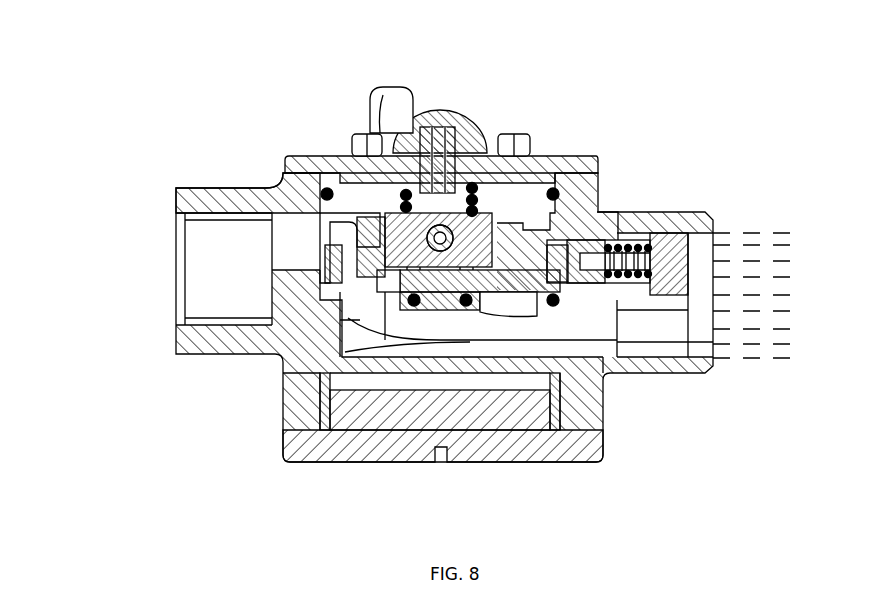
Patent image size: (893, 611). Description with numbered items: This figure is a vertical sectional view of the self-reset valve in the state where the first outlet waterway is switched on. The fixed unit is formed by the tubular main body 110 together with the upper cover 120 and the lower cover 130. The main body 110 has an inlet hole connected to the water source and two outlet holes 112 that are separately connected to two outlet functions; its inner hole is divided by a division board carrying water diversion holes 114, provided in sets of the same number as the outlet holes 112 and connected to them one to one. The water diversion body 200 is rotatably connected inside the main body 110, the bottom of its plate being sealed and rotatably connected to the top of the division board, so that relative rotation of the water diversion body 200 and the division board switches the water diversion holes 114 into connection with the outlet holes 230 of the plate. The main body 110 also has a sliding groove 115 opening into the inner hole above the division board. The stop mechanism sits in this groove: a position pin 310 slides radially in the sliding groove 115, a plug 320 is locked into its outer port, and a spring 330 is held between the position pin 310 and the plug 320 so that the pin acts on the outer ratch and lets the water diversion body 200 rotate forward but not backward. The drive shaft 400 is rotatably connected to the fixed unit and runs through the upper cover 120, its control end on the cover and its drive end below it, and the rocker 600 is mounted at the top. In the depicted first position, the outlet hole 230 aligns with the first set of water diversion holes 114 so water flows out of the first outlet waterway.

The main body 110 is at (577, 375).
The upper cover 120 is at (313, 172).
The lower cover 130 is at (507, 418).
The water diversion holes 114 is at (345, 243).
The sliding groove 115 is at (607, 240).
The outlet holes 112 is at (663, 327).
The water diversion body 200 is at (530, 263).
The outlet holes 230 is at (358, 255).
The position pin 310 is at (573, 237).
The plug 320 is at (672, 238).
The spring 330 is at (620, 240).
The drive shaft 400 is at (353, 157).
The rocker 600 is at (400, 113).